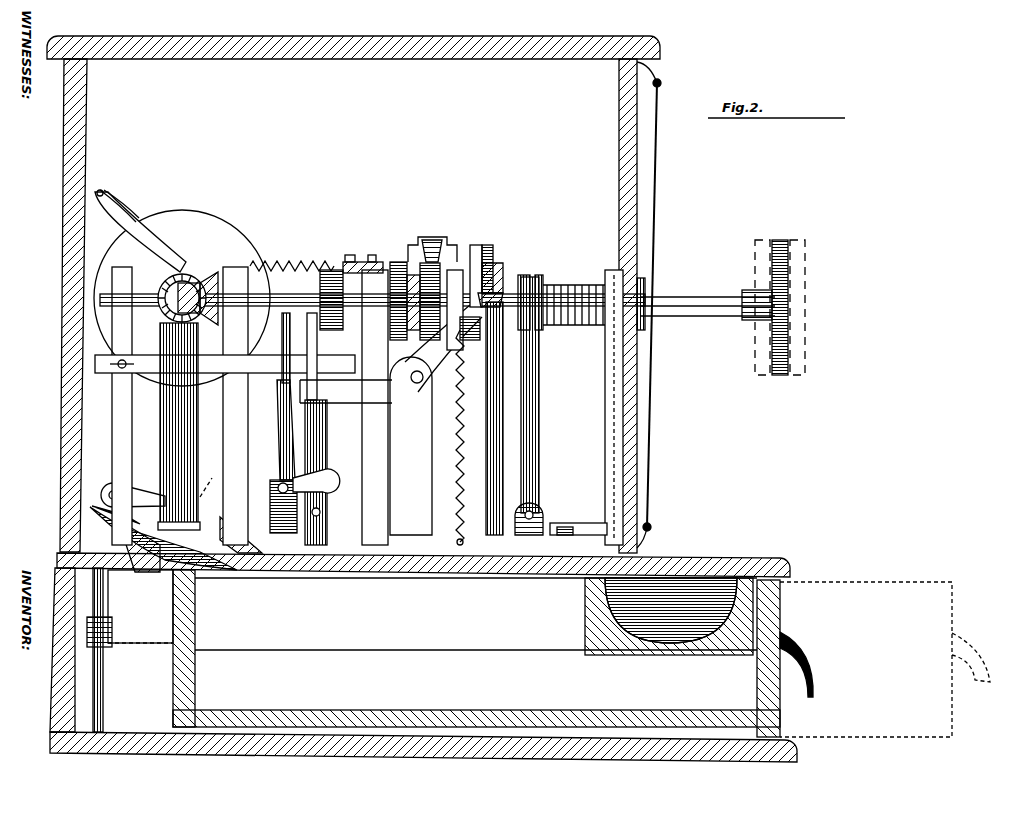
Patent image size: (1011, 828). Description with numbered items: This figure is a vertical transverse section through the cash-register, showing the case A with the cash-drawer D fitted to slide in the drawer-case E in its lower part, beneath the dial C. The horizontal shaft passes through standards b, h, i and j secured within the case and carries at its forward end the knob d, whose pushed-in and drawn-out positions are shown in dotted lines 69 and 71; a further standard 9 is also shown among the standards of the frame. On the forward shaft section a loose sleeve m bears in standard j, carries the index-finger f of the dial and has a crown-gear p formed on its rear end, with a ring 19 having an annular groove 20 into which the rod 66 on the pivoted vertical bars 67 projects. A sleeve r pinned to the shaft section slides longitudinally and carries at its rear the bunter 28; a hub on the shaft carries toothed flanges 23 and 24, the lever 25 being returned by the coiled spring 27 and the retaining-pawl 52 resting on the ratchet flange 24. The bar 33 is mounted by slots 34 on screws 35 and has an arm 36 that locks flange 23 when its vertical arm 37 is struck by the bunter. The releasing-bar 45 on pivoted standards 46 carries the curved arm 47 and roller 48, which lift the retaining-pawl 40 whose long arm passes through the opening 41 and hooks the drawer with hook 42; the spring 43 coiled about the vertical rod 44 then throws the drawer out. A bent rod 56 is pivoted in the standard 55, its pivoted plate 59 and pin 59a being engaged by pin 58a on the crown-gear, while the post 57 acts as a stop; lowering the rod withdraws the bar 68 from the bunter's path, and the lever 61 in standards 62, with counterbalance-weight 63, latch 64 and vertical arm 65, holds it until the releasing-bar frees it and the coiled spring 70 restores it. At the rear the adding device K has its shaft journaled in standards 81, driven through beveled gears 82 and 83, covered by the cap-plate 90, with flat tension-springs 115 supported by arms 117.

The case A is at (352, 60).
The dial C is at (655, 408).
The cash-drawer D is at (522, 575).
The drawer-case E is at (557, 653).
The shaft L is at (437, 321).
The adding device K is at (205, 212).
The standard b is at (105, 405).
The knob d is at (790, 325).
The index-finger f is at (645, 290).
The standard h is at (380, 262).
The standard i is at (477, 244).
The standard j is at (600, 411).
The sleeve m is at (566, 288).
The crown-gear p is at (528, 275).
The sleeve r is at (350, 256).
The post 9 is at (240, 266).
The ring 19 is at (570, 285).
The annular groove 20 is at (540, 275).
The toothed flange 23 is at (400, 260).
The toothed flange 24 is at (455, 268).
The lever 25 is at (355, 272).
The coiled spring 27 is at (296, 262).
The bunter 28 is at (320, 276).
The bar 33 is at (210, 380).
The slot 34 is at (137, 373).
The screw 35 is at (122, 373).
The arm 36 is at (412, 348).
The vertical arm 37 is at (307, 340).
The retaining-pawl 40 is at (160, 572).
The opening 41 is at (130, 570).
The hook 42 is at (240, 572).
The spring 43 is at (130, 643).
The vertical rod 44 is at (104, 678).
The releasing-bar 45 is at (340, 262).
The pivoted standard 46 is at (326, 445).
The curved arm 47 is at (203, 500).
The roller 48 is at (106, 484).
The retaining-pawl 52 is at (432, 237).
The vertical standard 55 is at (411, 446).
The bent rod 56 is at (486, 262).
The post 57 is at (503, 418).
The pin 58a is at (520, 268).
The pivoted plate 59 is at (508, 262).
The pin 59a is at (503, 265).
The lever 61 is at (280, 450).
The standard 62 is at (272, 505).
The counterbalance-weight 63 is at (328, 492).
The latch 64 is at (280, 395).
The vertical arm 65 is at (282, 318).
The longitudinal rod 66 is at (380, 412).
The pivoted vertical bar 67 is at (540, 395).
The vertical bar 68 is at (358, 386).
The dotted-line position 69 is at (756, 355).
The coiled spring 70 is at (462, 358).
The dotted-line position 71 is at (806, 272).
The standard 81 is at (179, 426).
The beveled gear 82 is at (188, 272).
The beveled gear 83 is at (215, 280).
The cap-plate 90 is at (172, 210).
The flat tension-spring 115 is at (118, 205).
The arm 117 is at (140, 232).